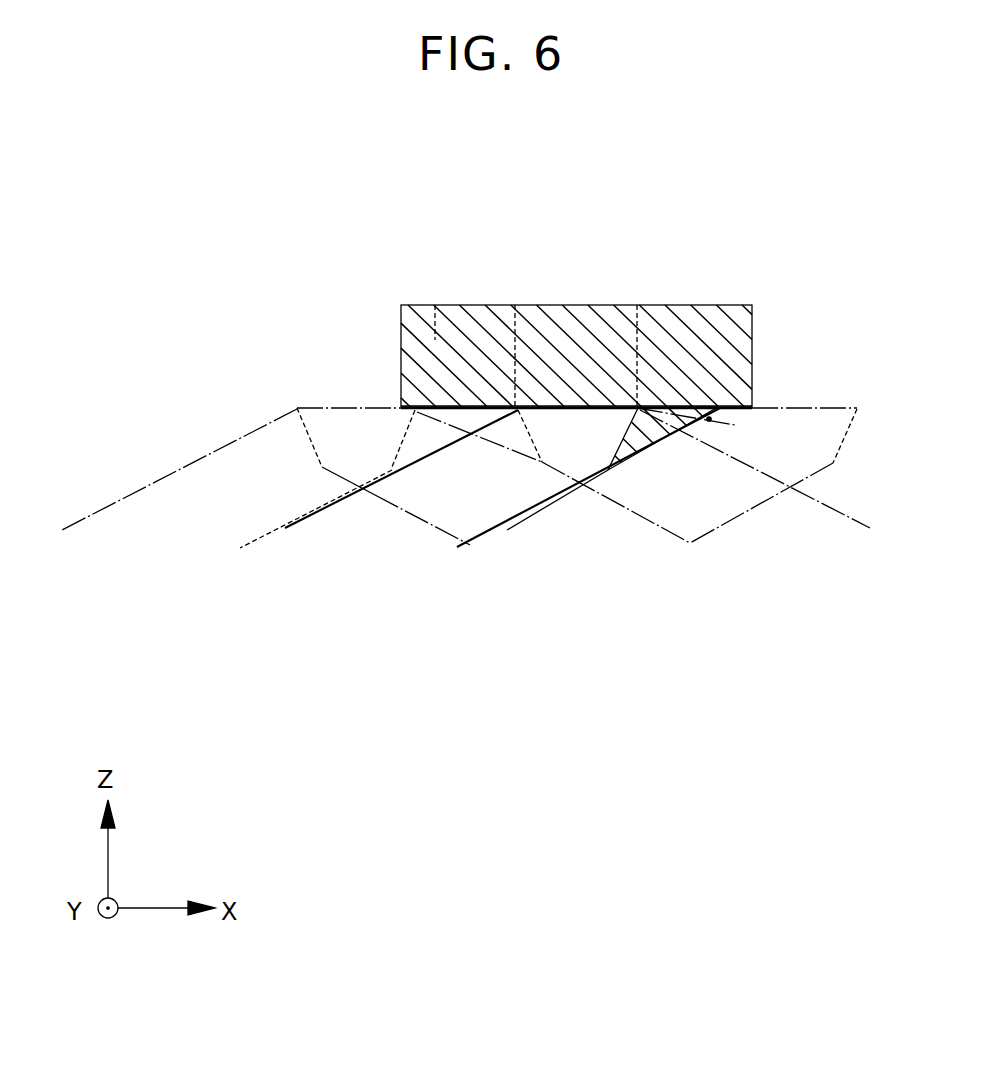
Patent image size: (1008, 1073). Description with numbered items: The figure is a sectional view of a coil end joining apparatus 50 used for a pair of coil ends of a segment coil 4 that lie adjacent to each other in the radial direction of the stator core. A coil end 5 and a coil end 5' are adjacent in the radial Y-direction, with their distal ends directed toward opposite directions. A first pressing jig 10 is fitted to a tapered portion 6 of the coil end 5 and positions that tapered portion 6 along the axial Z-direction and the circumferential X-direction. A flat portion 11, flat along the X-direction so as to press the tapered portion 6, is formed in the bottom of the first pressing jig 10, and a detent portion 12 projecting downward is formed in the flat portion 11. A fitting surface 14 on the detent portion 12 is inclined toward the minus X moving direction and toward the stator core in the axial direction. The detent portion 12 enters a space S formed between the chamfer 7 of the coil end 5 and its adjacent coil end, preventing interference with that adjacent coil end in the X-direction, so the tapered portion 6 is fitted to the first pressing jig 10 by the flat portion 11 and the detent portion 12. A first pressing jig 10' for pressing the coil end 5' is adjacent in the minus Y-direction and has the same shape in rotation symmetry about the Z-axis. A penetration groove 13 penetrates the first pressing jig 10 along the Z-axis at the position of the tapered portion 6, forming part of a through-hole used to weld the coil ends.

The segment coil 4 is at (238, 610).
The coil end 5 is at (355, 548).
The coil end 5' is at (755, 534).
The tapered portion 6 is at (470, 488).
The chamfer 7 is at (618, 445).
The first pressing jig 10 is at (576, 294).
The first pressing jig 10' is at (400, 256).
The flat portion 11 is at (480, 403).
The detent portion 12 is at (655, 437).
The penetration groove 13 is at (647, 355).
The fitting surface 14 is at (648, 445).
The space S is at (712, 419).
The coil end joining apparatus 50 is at (657, 718).